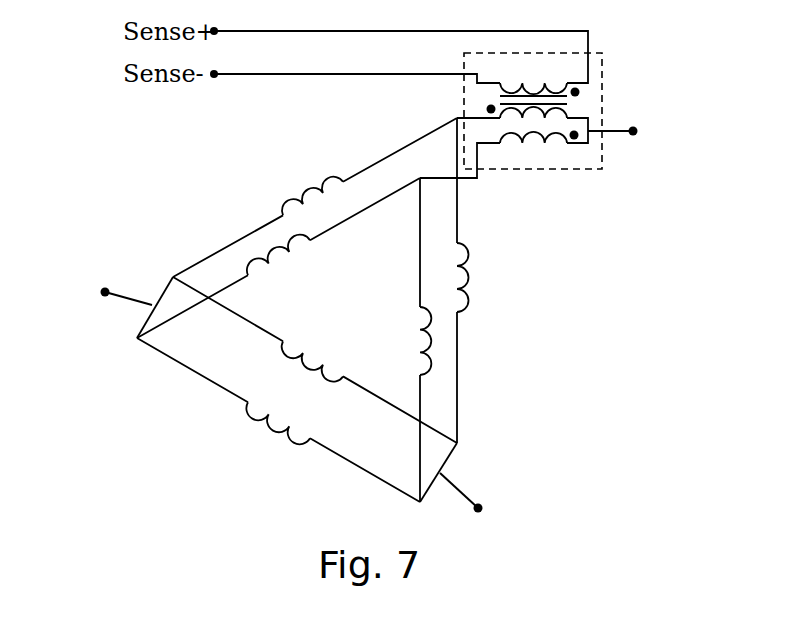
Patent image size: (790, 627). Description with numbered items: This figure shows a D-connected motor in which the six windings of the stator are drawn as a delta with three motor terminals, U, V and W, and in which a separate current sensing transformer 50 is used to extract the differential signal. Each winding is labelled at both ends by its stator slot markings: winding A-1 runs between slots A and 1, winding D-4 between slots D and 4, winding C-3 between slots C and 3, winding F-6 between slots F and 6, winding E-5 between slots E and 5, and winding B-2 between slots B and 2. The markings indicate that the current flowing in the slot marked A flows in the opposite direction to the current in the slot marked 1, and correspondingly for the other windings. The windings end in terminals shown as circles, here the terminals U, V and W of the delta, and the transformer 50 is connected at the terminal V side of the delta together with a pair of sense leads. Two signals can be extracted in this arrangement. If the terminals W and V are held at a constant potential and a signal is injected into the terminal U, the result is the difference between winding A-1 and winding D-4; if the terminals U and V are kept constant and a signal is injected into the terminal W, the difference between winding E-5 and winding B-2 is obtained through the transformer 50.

The transformer 50 is at (522, 173).
The stator slot 1 is at (319, 182).
The stator slot 2 is at (418, 354).
The stator slot 3 is at (310, 348).
The stator slot 4 is at (282, 244).
The stator slot 5 is at (454, 291).
The stator slot 6 is at (276, 409).
The stator slot A is at (307, 185).
The stator slot B is at (416, 344).
The stator slot C is at (323, 348).
The stator slot D is at (271, 248).
The stator slot E is at (453, 281).
The stator slot F is at (288, 409).
The terminal U is at (113, 291).
The terminal V is at (625, 131).
The terminal W is at (475, 505).